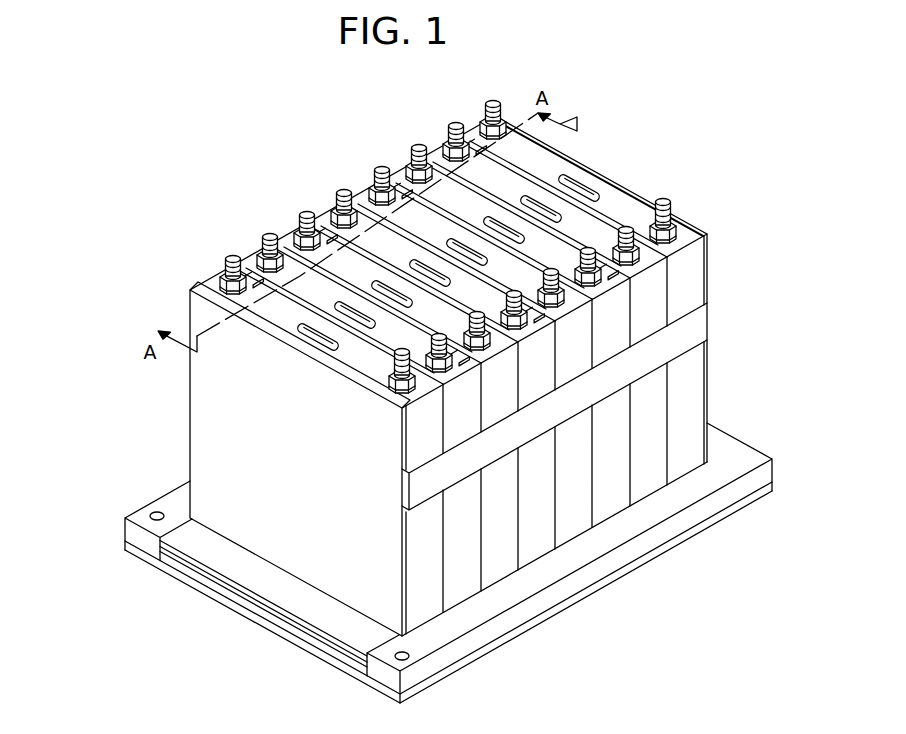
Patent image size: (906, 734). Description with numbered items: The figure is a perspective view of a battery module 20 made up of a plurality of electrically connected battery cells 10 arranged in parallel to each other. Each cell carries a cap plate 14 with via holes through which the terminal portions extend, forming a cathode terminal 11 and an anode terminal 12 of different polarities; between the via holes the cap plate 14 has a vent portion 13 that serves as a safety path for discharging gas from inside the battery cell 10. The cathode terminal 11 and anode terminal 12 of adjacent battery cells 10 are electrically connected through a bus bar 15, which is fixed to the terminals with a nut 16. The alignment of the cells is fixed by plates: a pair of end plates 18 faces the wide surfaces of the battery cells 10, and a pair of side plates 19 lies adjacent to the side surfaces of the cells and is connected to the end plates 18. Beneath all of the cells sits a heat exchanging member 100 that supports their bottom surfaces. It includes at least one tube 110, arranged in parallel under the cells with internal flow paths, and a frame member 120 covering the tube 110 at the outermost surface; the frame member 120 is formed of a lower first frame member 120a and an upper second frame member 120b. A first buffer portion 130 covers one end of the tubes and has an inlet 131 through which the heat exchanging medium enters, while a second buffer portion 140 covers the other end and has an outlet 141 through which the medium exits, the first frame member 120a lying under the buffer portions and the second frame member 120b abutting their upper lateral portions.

The battery cell 10 is at (650, 434).
The cathode terminal 11 is at (493, 99).
The anode terminal 12 is at (665, 198).
The vent portion 13 is at (579, 183).
The cap plate 14 is at (626, 205).
The bus bar 15 is at (247, 264).
The nut 16 is at (316, 230).
The end plate 18 is at (212, 404).
The side plate 19 is at (693, 322).
The battery module 20 is at (422, 392).
The heat exchanging member 100 is at (410, 576).
The tube 110 is at (333, 664).
The frame member 120 is at (217, 604).
The first frame member 120a is at (218, 588).
The second frame member 120b is at (210, 556).
The first buffer portion 130 is at (120, 503).
The inlet 131 is at (153, 511).
The second buffer portion 140 is at (569, 576).
The outlet 141 is at (412, 661).